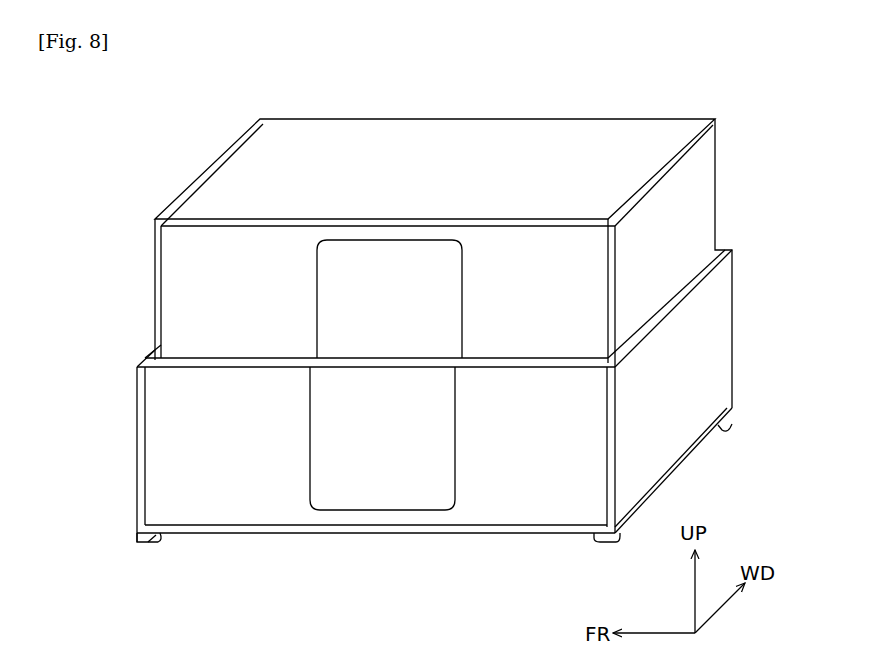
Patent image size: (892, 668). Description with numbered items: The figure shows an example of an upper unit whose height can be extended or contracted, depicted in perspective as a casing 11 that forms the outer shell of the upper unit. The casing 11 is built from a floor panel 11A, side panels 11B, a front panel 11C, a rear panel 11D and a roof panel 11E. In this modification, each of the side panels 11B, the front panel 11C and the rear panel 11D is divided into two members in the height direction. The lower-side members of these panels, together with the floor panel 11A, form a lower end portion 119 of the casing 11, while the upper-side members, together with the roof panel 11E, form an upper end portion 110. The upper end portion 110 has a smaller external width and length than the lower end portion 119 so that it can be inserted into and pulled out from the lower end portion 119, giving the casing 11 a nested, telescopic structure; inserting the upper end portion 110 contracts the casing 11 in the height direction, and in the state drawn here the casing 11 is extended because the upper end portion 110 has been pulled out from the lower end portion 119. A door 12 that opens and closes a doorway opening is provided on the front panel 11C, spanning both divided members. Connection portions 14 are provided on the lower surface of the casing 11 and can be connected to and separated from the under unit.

The casing 11 is at (164, 146).
The floor panel 11A is at (205, 536).
The side panels 11B is at (580, 530).
The front panel 11C is at (155, 300).
The rear panel 11D is at (707, 203).
The roof panel 11E is at (473, 128).
The upper end portion 110 is at (725, 138).
The lower end portion 119 is at (744, 385).
The door 12 is at (434, 512).
The connection portions 14 is at (150, 546).